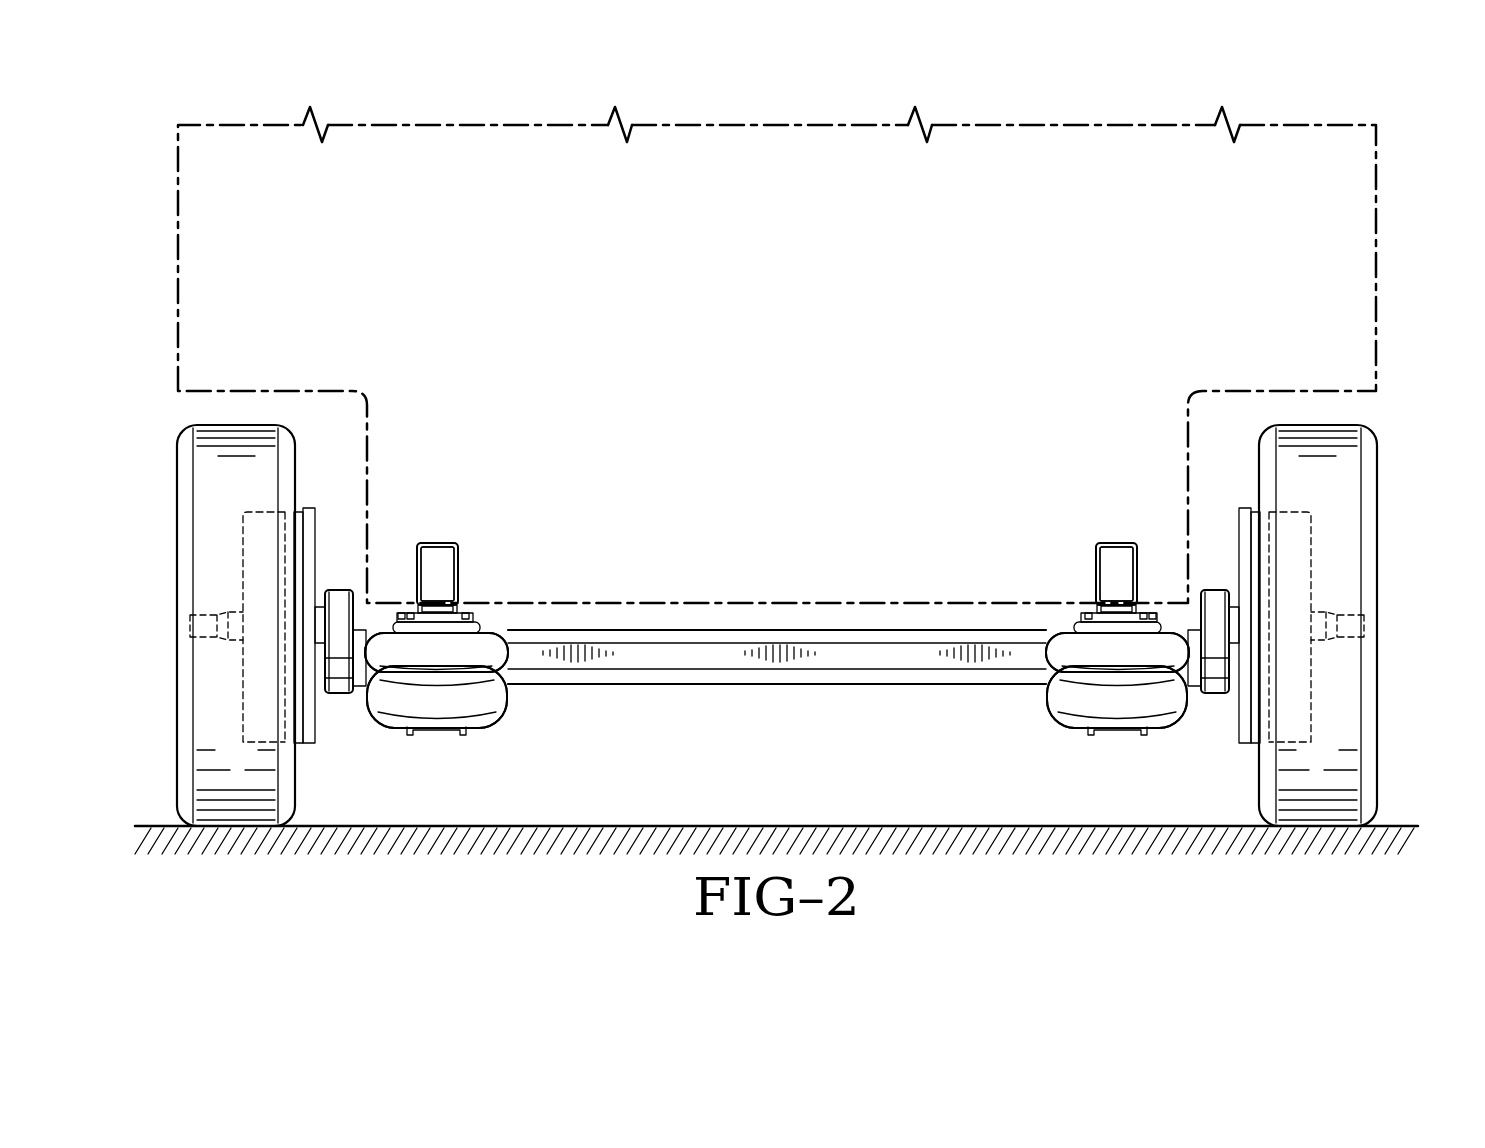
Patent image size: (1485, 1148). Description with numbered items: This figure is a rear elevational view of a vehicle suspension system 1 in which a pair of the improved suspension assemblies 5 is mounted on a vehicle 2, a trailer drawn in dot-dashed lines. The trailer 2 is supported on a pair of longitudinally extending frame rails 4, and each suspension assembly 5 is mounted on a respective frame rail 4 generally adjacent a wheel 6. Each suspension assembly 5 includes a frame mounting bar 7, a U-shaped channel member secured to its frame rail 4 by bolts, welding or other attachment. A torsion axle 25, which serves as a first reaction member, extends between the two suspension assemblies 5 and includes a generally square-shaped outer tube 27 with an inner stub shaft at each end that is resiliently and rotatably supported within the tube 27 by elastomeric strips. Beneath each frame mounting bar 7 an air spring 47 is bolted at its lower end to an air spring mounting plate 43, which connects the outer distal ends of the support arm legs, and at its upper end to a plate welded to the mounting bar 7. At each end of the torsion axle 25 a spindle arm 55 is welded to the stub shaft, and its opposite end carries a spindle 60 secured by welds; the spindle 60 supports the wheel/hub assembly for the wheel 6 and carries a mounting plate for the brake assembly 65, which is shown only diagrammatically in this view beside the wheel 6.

The vehicle suspension system 1 is at (785, 725).
The vehicle 2 is at (1376, 258).
The frame rail 4 is at (437, 546).
The suspension assembly 5 is at (523, 718).
The wheel 6 is at (187, 513).
The frame mounting bar 7 is at (434, 600).
The torsion axle 25 is at (865, 688).
The outer tube 27 is at (680, 662).
The air spring mounting plate 43 is at (434, 736).
The air spring 47 is at (483, 699).
The spindle arm 55 is at (347, 696).
The spindle 60 is at (198, 622).
The brake 65 is at (316, 527).